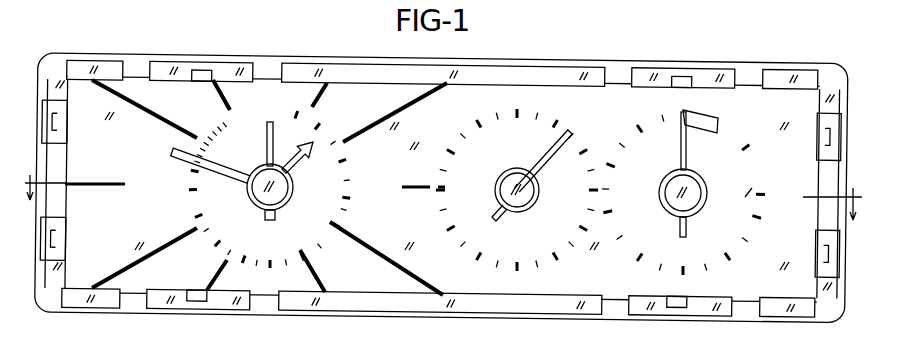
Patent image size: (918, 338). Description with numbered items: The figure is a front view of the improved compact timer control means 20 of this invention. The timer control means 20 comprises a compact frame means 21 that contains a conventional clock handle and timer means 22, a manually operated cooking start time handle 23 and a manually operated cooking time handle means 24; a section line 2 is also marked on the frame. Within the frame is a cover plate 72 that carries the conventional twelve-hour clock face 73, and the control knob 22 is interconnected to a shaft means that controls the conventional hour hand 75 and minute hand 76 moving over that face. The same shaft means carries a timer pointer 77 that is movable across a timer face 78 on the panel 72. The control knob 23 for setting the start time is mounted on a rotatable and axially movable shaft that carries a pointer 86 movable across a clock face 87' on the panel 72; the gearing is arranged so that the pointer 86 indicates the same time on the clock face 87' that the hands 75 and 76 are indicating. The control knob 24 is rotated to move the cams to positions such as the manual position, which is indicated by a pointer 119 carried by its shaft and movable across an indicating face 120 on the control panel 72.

The timer control means 20 is at (634, 42).
The compact frame means 21 is at (520, 76).
The section line 2- 2 is at (441, 185).
The twelve-hour clock face 73 is at (369, 98).
The cover plate 72 is at (481, 97).
The timer face 78 is at (296, 94).
The timer pointer 77 is at (270, 140).
The minute hand 76 is at (247, 180).
The hour hand 75 is at (293, 160).
The clock handle and timer means 22 is at (278, 199).
The clock face 87' is at (507, 157).
The cooking start time handle 23 is at (560, 128).
The pointer 86 is at (546, 165).
The pointer 119 is at (688, 165).
The indicating face 120 is at (696, 98).
The cooking time handle means 24 is at (690, 186).